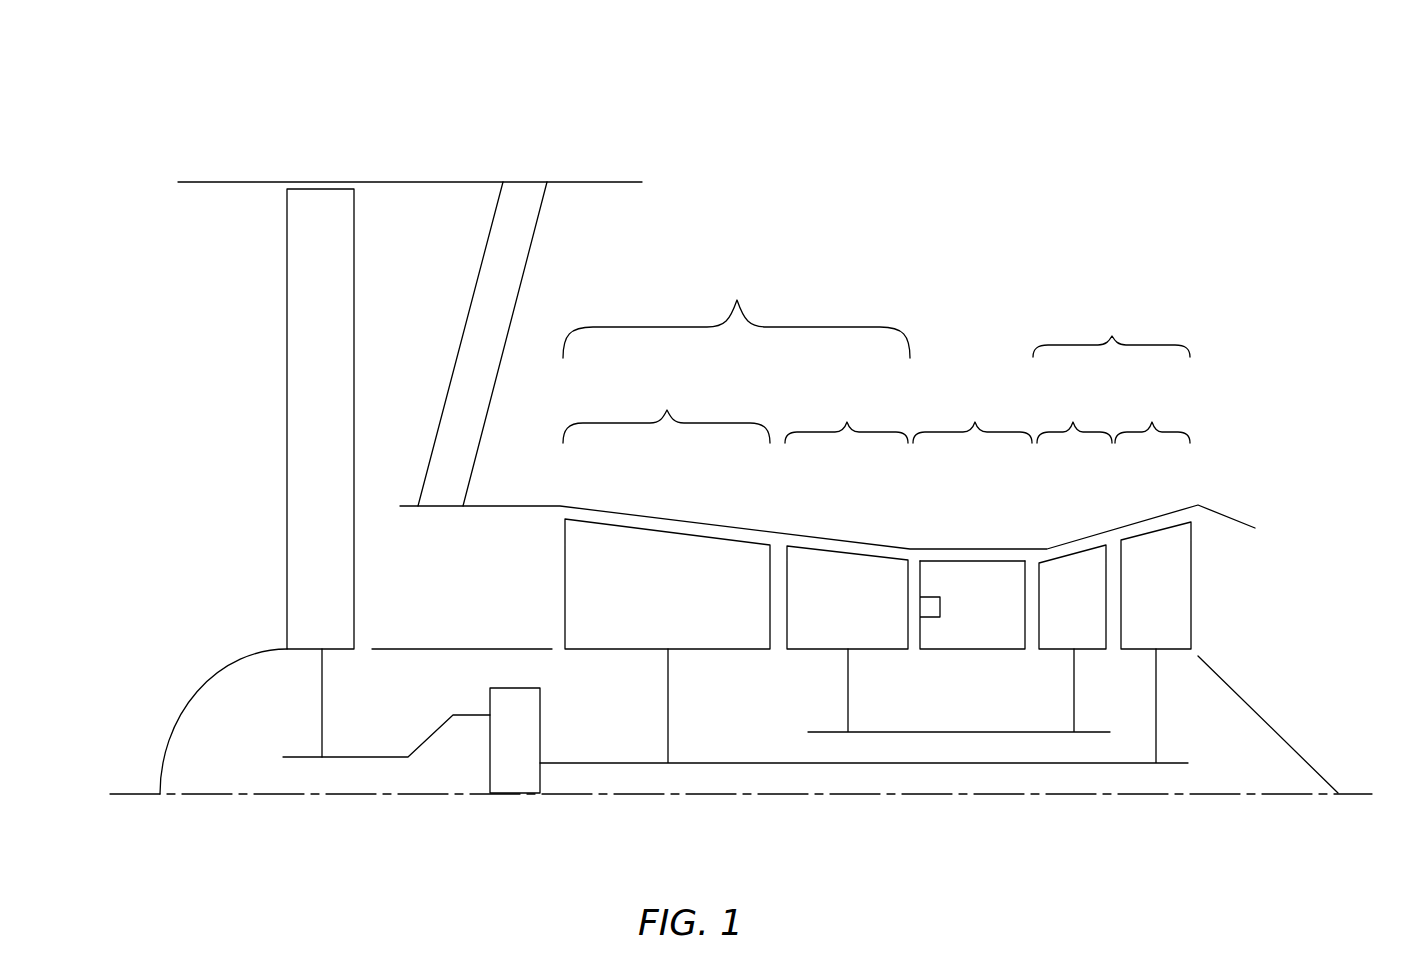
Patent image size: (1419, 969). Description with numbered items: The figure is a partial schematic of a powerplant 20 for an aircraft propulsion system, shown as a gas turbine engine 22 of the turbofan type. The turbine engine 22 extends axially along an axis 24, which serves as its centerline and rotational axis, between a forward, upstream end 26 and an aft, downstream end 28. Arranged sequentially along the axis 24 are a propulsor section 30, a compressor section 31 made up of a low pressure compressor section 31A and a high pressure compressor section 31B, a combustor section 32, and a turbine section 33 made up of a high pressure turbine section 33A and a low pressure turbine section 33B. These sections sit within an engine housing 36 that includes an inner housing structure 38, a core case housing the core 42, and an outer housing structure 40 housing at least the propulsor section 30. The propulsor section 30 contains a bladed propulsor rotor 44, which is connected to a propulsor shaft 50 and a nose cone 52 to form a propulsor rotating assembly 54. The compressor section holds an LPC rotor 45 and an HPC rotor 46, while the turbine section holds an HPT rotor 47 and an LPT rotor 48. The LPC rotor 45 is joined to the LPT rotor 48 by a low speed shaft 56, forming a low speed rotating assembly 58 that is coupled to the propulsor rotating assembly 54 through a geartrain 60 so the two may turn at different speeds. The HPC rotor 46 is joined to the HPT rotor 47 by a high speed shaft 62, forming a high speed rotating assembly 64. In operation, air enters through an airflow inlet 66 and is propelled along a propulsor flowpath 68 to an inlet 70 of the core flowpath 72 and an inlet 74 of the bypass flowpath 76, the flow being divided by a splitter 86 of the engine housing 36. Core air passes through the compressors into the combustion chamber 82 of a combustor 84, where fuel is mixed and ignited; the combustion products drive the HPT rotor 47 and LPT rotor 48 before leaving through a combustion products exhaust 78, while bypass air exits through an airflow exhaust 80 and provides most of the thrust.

The powerplant 20 is at (720, 441).
The gas turbine engine 22 is at (157, 95).
The axis 24 is at (133, 797).
The forward, upstream end 26 is at (160, 794).
The aft, downstream end 28 is at (1338, 793).
The propulsor section 30 is at (327, 163).
The compressor section 31 is at (736, 315).
The low pressure compressor (LPC) section 31A is at (666, 413).
The high pressure compressor (HPC) section 31B is at (846, 419).
The combustor section 32 is at (972, 420).
The turbine section 33 is at (1111, 331).
The high pressure turbine (HPT) section 33A is at (1074, 421).
The low pressure turbine (LPT) section 33B is at (1152, 421).
The engine housing 36 is at (672, 172).
The inner housing structure 38 is at (695, 512).
The outer housing structure 40 is at (563, 172).
The core 42 is at (975, 322).
The bladed propulsor rotor 44 is at (310, 690).
The bladed low pressure compressor (LPC) rotor 45 is at (679, 611).
The bladed high pressure compressor (HPC) rotor 46 is at (863, 611).
The bladed high pressure turbine (HPT) rotor 47 is at (1088, 611).
The bladed low pressure turbine (LPT) rotor 48 is at (1171, 611).
The propulsor shaft 50 is at (347, 758).
The nose cone 52 is at (203, 700).
The propulsor rotating assembly 54 is at (268, 746).
The low speed shaft 56 is at (705, 765).
The low speed rotating assembly 58 is at (1192, 755).
The geartrain 60 is at (533, 755).
The high speed shaft 62 is at (968, 735).
The high speed rotating assembly 64 is at (795, 718).
The airflow inlet 66 is at (147, 453).
The propulsor flowpath 68 is at (258, 445).
The inlet 70 is at (390, 607).
The core flowpath 72 is at (496, 597).
The inlet 74 is at (390, 322).
The bypass flowpath 76 is at (591, 298).
The combustion products exhaust 78 is at (1248, 625).
The airflow exhaust 80 is at (636, 251).
The combustion chamber 82 is at (991, 611).
The combustor 84 is at (975, 562).
The splitter 86 is at (400, 506).